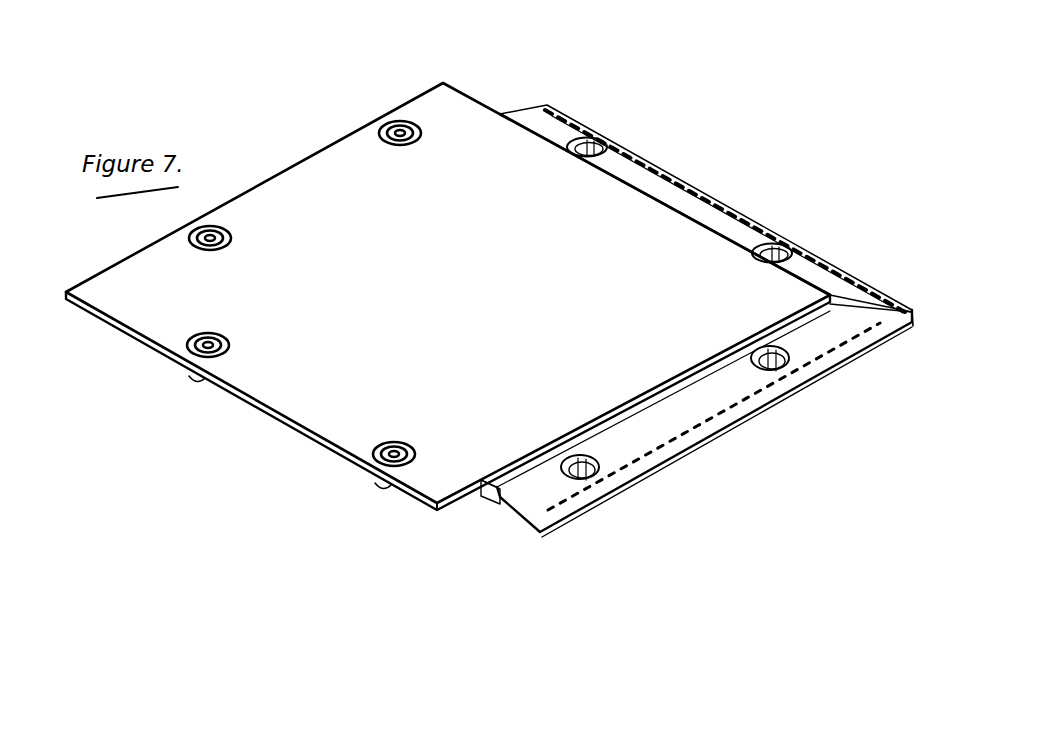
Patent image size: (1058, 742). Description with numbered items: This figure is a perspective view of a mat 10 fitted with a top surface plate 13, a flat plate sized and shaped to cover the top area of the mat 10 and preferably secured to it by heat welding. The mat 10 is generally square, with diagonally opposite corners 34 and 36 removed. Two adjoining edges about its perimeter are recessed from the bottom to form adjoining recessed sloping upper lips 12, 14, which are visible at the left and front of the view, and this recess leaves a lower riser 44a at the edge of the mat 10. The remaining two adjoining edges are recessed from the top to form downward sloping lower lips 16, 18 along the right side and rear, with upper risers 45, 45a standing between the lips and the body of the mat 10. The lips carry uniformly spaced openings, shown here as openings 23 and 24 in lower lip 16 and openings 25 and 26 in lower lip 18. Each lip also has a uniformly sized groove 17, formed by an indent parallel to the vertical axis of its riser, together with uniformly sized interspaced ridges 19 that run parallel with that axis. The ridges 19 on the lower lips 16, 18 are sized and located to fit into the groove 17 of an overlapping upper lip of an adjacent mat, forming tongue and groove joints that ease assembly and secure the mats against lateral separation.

The mat 10 is at (389, 66).
The recessed sloping upper lip 12 is at (292, 162).
The top surface plate 13 is at (160, 312).
The recessed sloping upper lip 14 is at (254, 413).
The downward sloping lower lip 16 is at (650, 160).
The groove 17 is at (533, 130).
The downward sloping lower lip 18 is at (722, 432).
The interspaced ridges 19 is at (872, 286).
The opening 23 is at (597, 133).
The opening 24 is at (785, 247).
The opening 25 is at (797, 377).
The opening 26 is at (615, 492).
The removed corner 34 is at (518, 102).
The removed corner 36 is at (518, 533).
The lower riser 44a is at (482, 495).
The upper riser 45 is at (623, 410).
The upper riser 45a is at (688, 220).